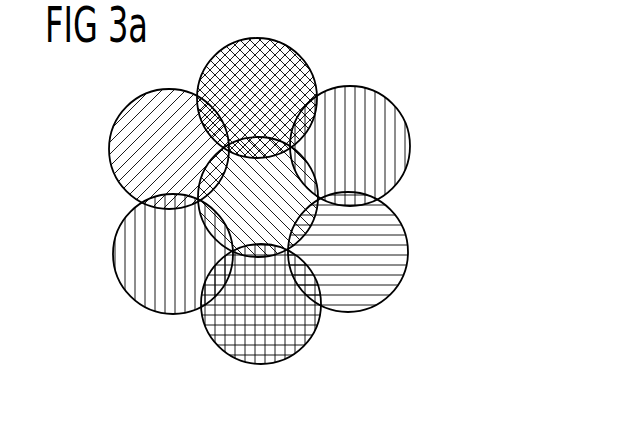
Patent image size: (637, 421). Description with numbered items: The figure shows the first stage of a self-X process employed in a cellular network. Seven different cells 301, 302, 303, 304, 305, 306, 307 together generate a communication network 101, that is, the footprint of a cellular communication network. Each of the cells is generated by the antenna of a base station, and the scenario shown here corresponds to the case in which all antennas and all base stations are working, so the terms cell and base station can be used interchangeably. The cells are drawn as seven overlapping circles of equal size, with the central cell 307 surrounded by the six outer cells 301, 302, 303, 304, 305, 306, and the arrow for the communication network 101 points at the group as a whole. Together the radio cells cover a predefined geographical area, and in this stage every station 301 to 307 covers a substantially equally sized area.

The communication network 101 is at (455, 197).
The cell 301 is at (408, 143).
The cell 302 is at (406, 249).
The cell 303 is at (312, 333).
The cell 304 is at (121, 256).
The cell 305 is at (118, 154).
The cell 306 is at (304, 59).
The cell 307 is at (282, 211).